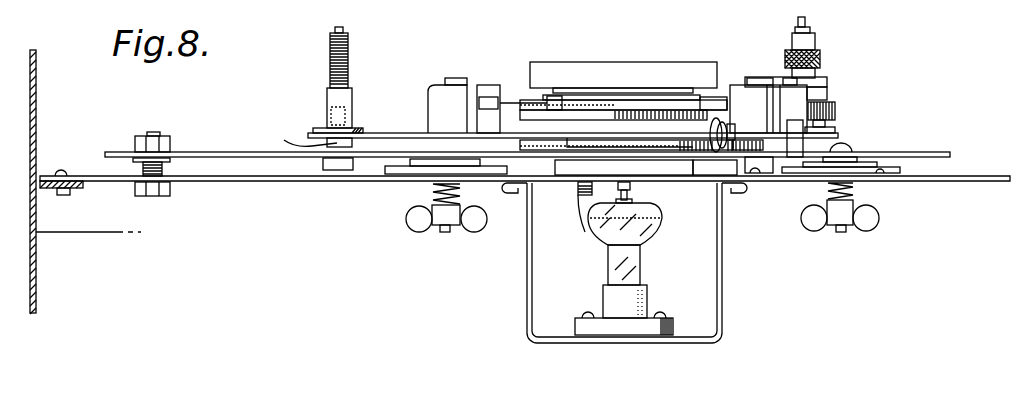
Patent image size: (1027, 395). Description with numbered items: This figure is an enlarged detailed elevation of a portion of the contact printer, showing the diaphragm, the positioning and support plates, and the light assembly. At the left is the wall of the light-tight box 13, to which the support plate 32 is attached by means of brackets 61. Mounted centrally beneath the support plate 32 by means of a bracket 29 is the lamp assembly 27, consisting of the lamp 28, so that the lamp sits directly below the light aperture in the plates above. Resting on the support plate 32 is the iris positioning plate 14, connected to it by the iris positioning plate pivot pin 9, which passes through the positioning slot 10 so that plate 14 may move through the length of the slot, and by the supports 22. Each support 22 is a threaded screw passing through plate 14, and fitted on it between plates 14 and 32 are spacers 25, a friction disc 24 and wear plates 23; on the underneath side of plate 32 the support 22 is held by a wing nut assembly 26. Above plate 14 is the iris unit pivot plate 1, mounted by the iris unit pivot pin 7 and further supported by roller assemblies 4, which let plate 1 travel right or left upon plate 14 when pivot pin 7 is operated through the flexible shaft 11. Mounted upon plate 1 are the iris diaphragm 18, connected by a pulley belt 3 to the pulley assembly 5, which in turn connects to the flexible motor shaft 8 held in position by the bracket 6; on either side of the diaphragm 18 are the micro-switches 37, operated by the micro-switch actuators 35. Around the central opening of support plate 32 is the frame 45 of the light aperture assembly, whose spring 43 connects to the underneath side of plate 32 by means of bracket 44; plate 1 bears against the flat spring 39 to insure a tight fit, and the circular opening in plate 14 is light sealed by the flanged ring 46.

The iris unit pivot plate 1 is at (385, 133).
The pulley belt 3 is at (516, 112).
The roller assemblies 4 is at (734, 140).
The pulley assembly 5 is at (836, 113).
The bracket 6 is at (826, 93).
The iris unit pivot pin 7 is at (303, 133).
The flexible motor shaft 8 is at (806, 20).
The iris positioning plate pivot pin 9 is at (165, 126).
The positioning slot 10 is at (181, 190).
The flexible shaft 11 is at (335, 56).
The light-tight box 13 is at (36, 278).
The iris positioning plate 14 is at (222, 151).
The iris diaphragm 18 is at (634, 62).
The supports 22 is at (445, 150).
The wear plates 23 is at (372, 178).
The friction disc 24 is at (897, 166).
The spacers 25 is at (862, 162).
The wing nut assembly 26 is at (430, 219).
The lamp assembly 27 is at (650, 295).
The lamp 28 is at (658, 233).
The bracket 29 is at (723, 297).
The support plate 32 is at (317, 183).
The micro-switch actuators 35 is at (620, 100).
The micro-switches 37 is at (432, 86).
The flat spring 39 is at (543, 183).
The spring 43 is at (582, 190).
The bracket 44 is at (568, 223).
The frame 45 is at (687, 170).
The flanged ring 46 is at (770, 176).
The brackets 61 is at (67, 195).